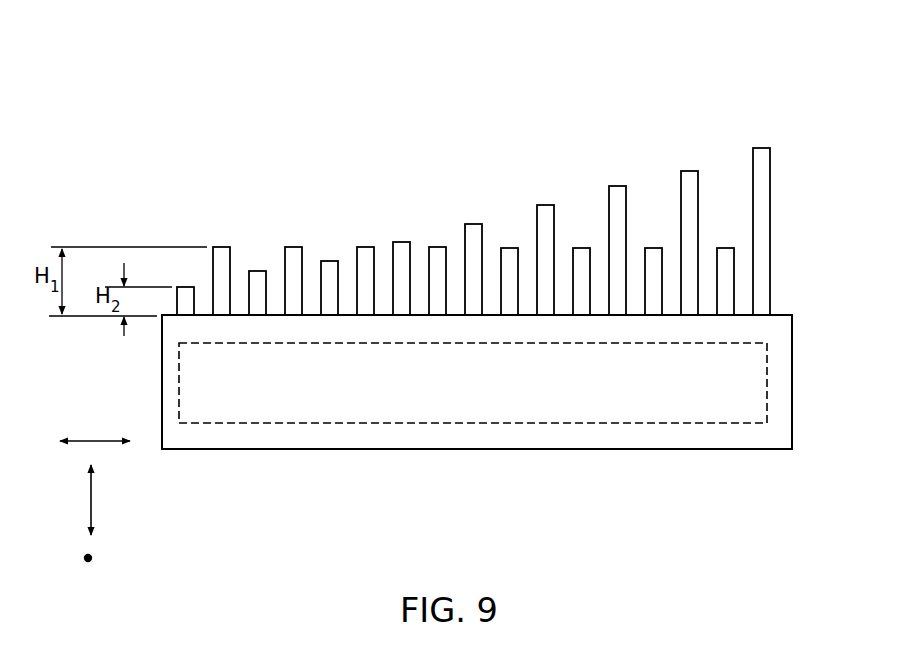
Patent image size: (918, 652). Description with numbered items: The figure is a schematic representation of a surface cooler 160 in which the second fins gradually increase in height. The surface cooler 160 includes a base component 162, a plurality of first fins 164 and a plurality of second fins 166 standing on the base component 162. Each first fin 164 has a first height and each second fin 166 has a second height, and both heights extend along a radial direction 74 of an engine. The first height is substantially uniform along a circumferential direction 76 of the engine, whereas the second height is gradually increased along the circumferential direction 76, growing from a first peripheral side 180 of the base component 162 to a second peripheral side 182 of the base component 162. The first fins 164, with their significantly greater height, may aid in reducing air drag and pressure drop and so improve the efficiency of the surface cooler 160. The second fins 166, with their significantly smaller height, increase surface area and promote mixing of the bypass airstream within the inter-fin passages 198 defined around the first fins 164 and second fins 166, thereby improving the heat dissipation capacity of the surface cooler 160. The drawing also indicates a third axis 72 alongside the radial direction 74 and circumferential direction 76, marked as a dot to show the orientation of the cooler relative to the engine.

The surface cooler 160 is at (767, 61).
The base component 162 is at (799, 374).
The first fins 164 is at (585, 247).
The second fins 166 is at (760, 148).
The inter-fin passages 198 is at (312, 282).
The first peripheral side 180 is at (162, 380).
The second peripheral side 182 is at (792, 410).
The circumferential direction 76 is at (103, 440).
The radial direction 74 is at (92, 488).
The axis out of page 72 is at (85, 557).